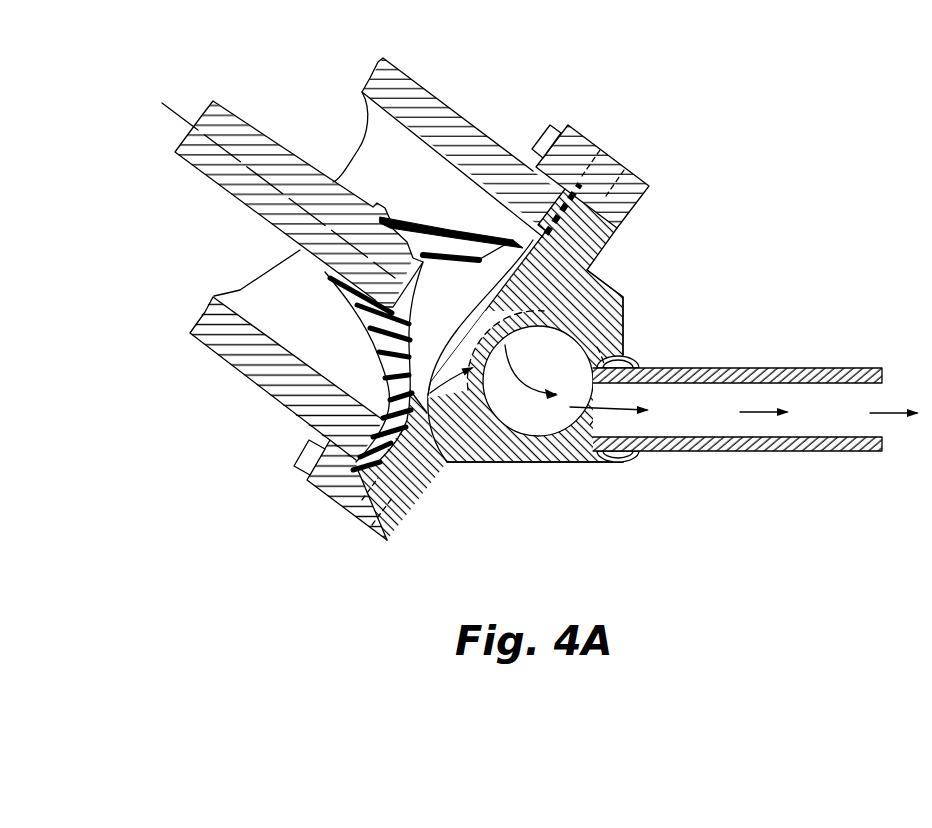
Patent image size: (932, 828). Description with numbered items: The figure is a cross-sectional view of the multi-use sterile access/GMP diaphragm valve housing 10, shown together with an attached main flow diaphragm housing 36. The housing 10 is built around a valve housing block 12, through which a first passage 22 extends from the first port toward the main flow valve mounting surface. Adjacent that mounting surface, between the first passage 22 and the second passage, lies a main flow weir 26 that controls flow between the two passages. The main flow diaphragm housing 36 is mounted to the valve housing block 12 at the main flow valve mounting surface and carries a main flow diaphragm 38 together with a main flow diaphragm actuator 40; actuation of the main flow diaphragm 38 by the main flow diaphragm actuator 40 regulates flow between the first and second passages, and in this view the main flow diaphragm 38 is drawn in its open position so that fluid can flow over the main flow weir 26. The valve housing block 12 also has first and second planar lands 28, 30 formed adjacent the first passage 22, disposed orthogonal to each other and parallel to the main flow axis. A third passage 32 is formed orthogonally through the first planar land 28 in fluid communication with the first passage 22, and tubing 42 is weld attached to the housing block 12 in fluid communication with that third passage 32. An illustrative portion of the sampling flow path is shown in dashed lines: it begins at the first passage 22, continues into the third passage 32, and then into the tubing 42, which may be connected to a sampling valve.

The multi-use sterile access/GMP diaphragm valve housing 10 is at (540, 288).
The valve housing block 12 is at (632, 172).
The first passage 22 is at (452, 395).
The main flow weir 26 is at (431, 430).
The first planar land 28 is at (627, 318).
The second planar land 30 is at (547, 462).
The third passage 32 is at (603, 424).
The main flow diaphragm housing 36 is at (435, 96).
The main flow diaphragm 38 is at (447, 232).
The main flow diaphragm actuator 40 is at (250, 125).
The tubing 42 is at (786, 452).